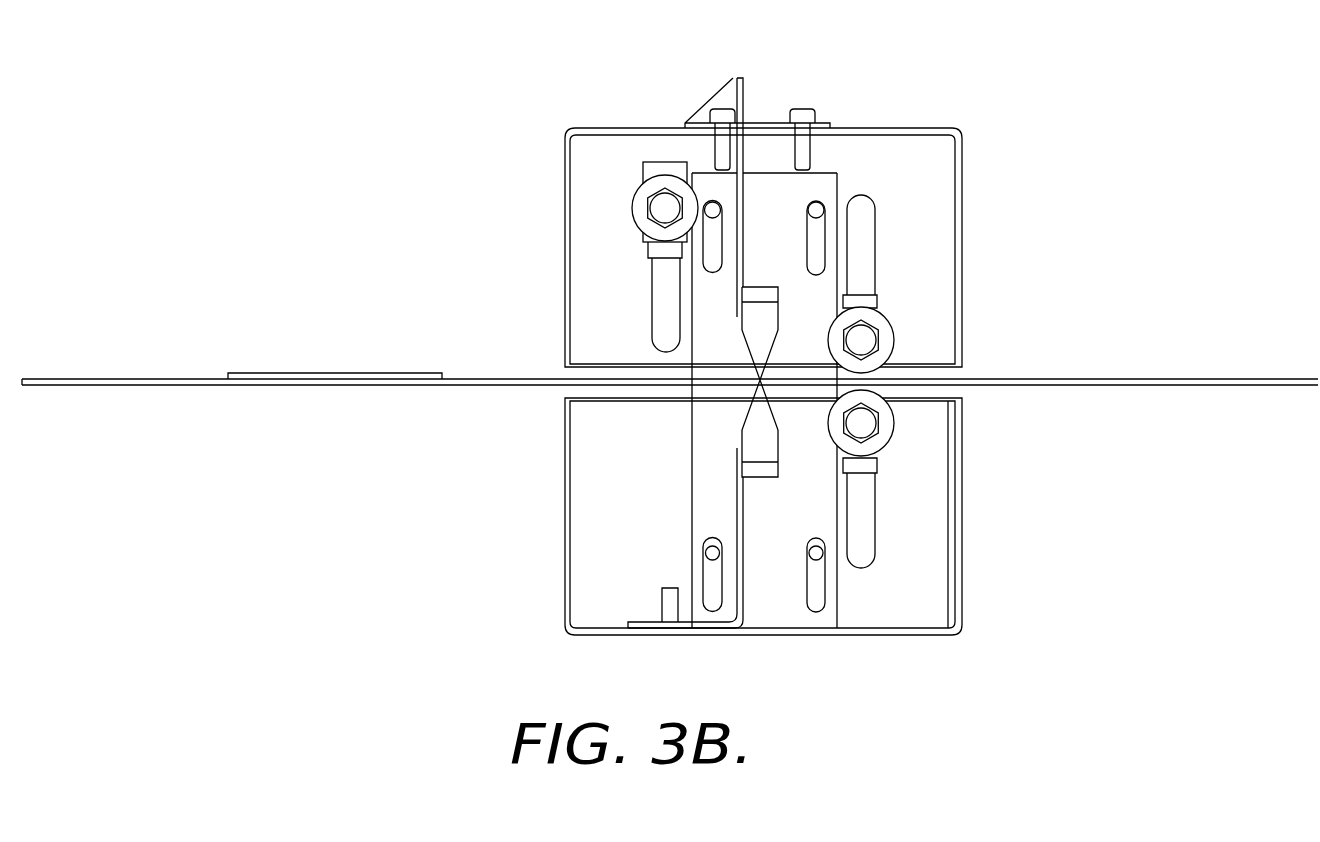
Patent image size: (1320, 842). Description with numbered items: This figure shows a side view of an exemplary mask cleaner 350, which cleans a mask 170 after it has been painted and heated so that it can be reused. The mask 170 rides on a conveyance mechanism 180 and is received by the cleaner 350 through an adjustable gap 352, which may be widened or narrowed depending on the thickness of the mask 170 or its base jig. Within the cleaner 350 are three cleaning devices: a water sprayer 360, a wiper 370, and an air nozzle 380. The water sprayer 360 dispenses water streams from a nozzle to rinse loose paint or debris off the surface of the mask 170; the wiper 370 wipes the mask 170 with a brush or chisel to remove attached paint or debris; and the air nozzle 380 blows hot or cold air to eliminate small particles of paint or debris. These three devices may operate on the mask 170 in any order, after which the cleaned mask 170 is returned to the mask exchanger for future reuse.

The mask cleaner 350 is at (318, 88).
The adjustable gap 352 is at (962, 375).
The water sprayer 360 is at (633, 203).
The wiper 370 is at (743, 150).
The air nozzle 380 is at (893, 330).
The mask 170 is at (305, 372).
The conveyance mechanism 180 is at (1108, 378).